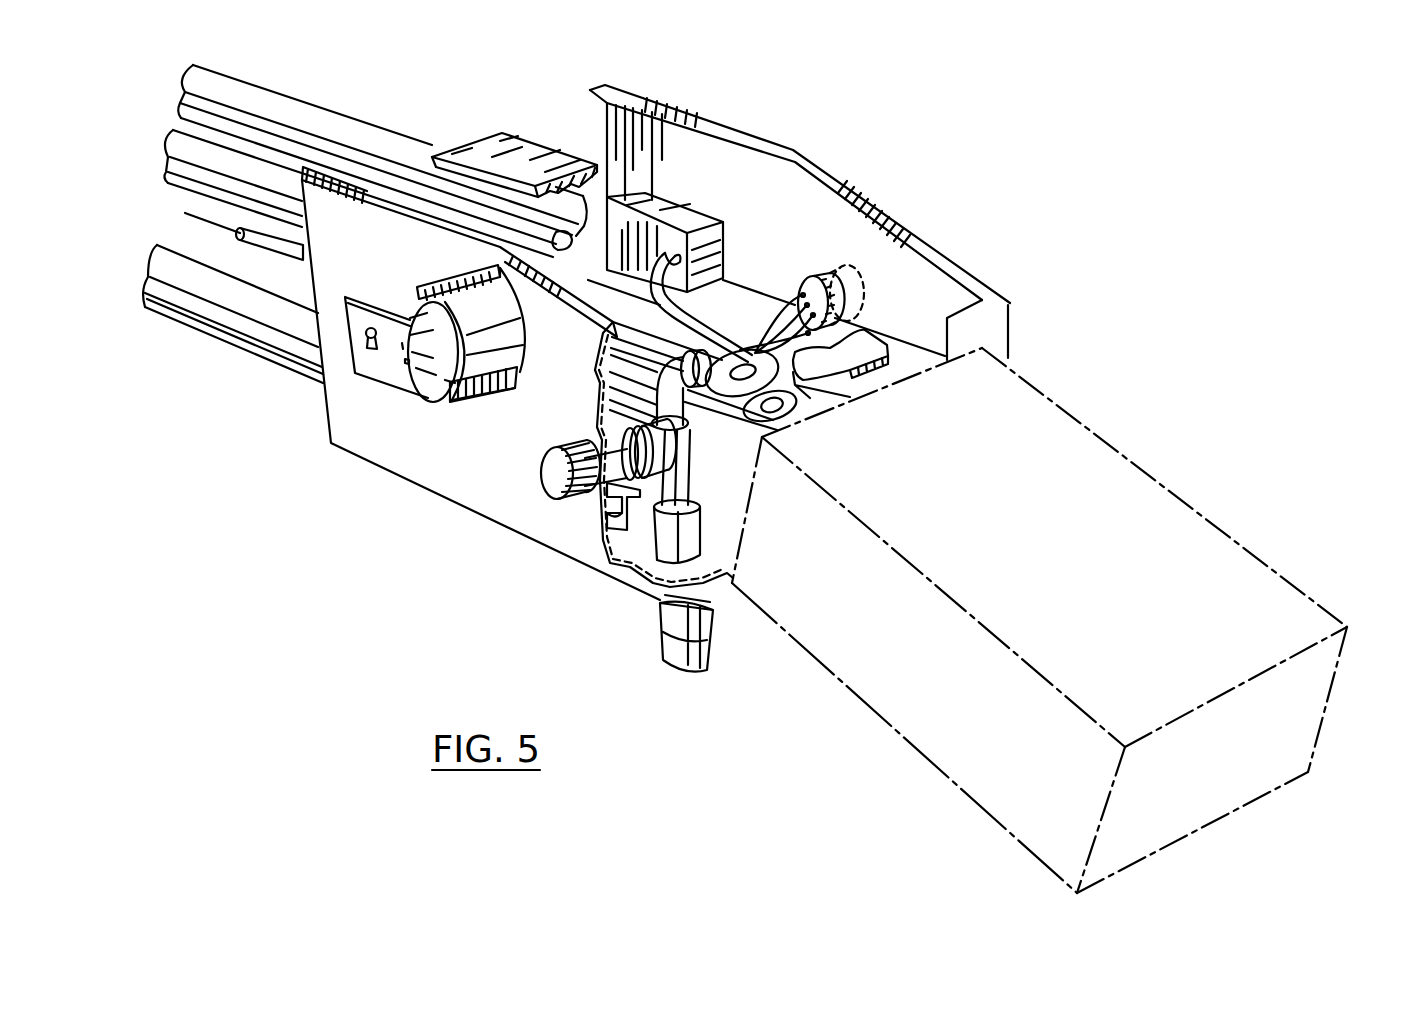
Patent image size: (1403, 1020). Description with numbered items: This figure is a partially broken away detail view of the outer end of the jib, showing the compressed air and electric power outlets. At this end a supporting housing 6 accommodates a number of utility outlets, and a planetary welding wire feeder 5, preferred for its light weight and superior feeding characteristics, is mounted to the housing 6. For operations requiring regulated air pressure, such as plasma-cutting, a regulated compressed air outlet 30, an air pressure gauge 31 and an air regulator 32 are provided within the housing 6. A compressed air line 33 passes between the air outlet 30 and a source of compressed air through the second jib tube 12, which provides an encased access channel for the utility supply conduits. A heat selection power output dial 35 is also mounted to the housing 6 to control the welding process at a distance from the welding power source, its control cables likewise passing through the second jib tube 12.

The planetary welding wire feeder 5 is at (1170, 486).
The supporting housing 6 is at (953, 260).
The second jib tube 12 is at (186, 191).
The regulated compressed air outlet 30 is at (680, 672).
The air pressure gauge 31 is at (600, 533).
The air regulator 32 is at (540, 477).
The compressed air line 33 is at (755, 353).
The heat selection power output dial 35 is at (829, 273).